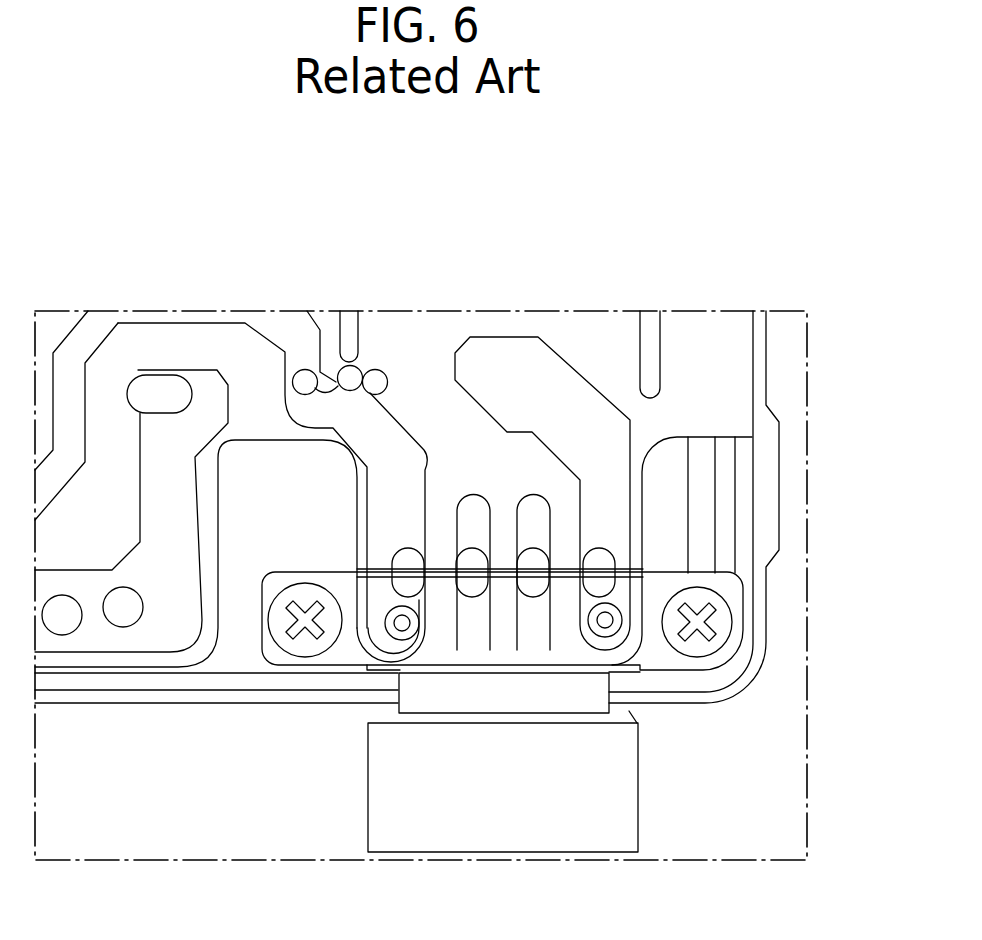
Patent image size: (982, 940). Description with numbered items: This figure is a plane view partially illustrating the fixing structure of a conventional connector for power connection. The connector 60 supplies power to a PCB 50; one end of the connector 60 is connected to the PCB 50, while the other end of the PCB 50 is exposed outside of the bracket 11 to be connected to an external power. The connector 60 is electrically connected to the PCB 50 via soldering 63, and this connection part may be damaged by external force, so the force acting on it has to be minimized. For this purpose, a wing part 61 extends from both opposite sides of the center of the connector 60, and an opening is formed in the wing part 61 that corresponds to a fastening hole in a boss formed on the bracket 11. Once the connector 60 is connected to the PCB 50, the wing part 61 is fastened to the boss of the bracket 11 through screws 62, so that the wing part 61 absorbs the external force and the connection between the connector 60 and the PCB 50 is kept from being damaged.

The bracket 11 is at (763, 585).
The PCB 50 is at (422, 655).
The connector 60 is at (598, 789).
The wing part 61 is at (728, 657).
The screws 62 is at (725, 622).
The soldering 63 is at (593, 560).